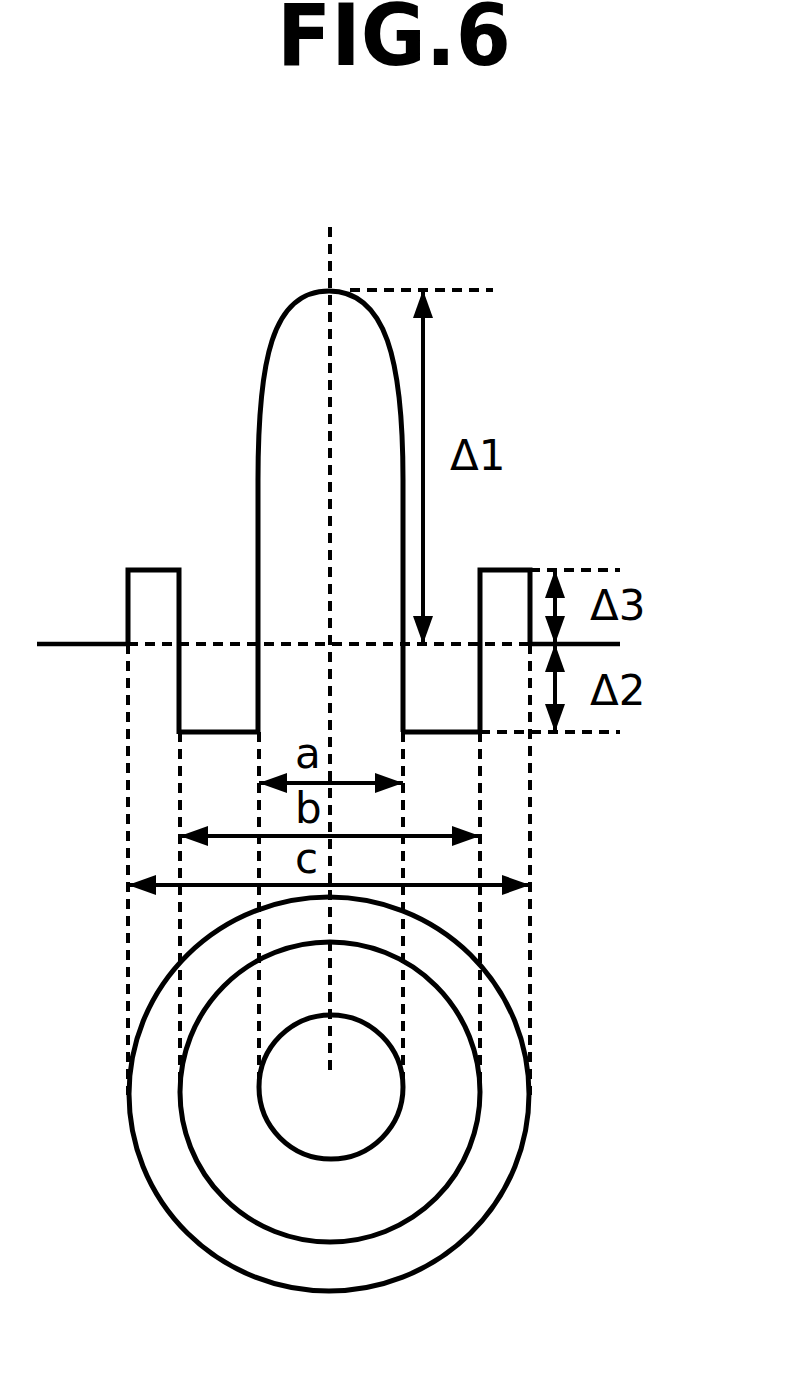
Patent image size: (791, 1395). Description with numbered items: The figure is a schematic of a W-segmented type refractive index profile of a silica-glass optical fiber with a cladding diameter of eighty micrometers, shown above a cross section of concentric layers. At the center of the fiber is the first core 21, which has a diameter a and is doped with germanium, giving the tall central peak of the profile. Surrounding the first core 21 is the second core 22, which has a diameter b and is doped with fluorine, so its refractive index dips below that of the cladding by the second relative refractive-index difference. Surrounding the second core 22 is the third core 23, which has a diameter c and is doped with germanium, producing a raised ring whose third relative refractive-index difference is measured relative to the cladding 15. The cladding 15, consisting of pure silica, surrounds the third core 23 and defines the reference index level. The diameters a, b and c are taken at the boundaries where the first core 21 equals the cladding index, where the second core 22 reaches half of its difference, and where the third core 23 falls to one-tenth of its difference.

The cladding 15 is at (533, 1093).
The first core 21 is at (340, 1125).
The second core 22 is at (423, 1153).
The third core 23 is at (498, 1127).